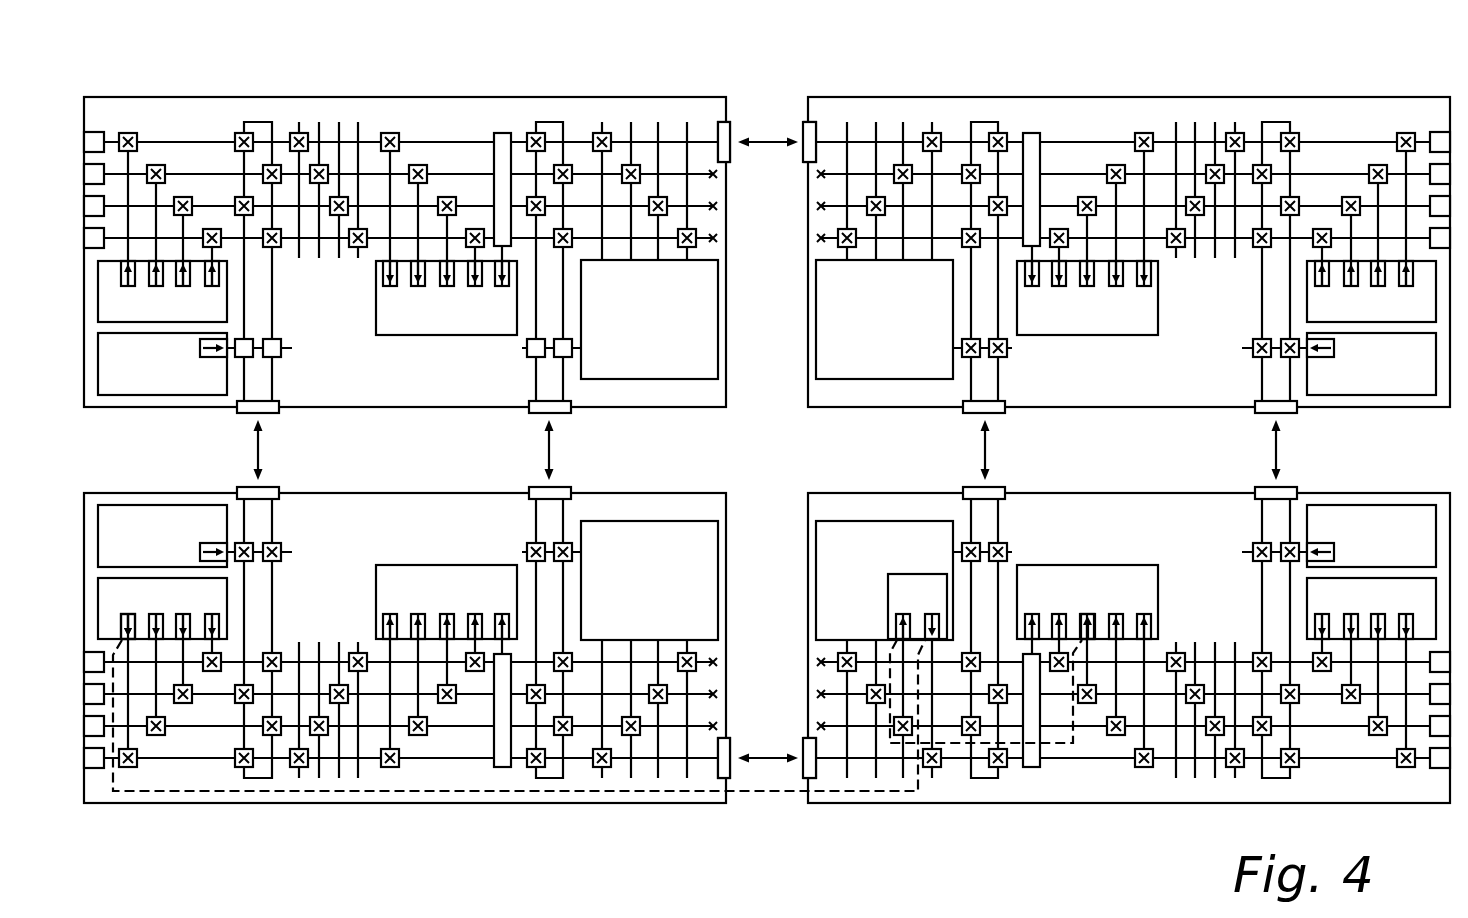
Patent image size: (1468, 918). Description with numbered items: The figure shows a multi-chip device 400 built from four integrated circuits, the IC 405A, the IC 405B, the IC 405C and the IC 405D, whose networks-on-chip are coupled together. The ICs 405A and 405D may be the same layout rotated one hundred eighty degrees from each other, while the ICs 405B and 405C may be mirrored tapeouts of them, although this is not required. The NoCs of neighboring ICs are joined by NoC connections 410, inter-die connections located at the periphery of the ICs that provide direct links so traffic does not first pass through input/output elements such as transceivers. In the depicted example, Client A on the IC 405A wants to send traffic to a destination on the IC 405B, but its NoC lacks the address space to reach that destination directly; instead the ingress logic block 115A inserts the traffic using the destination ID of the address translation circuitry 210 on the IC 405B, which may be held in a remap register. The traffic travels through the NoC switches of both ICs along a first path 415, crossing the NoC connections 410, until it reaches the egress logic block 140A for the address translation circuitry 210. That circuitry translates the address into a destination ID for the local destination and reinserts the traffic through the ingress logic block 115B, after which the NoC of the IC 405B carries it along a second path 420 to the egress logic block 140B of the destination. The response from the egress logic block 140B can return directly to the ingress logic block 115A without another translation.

The multi-chip device 400 is at (426, 47).
The IC 405A is at (218, 491).
The IC 405B is at (942, 491).
The IC 405C is at (942, 97).
The IC 405D is at (218, 97).
The NoC connections 410 is at (732, 153).
The ingress logic block 115A is at (135, 628).
The ingress logic block 115B is at (898, 622).
The egress logic block 140A is at (920, 635).
The egress logic block 140B is at (1084, 638).
The address translation circuitry 210 is at (920, 573).
The first path 415 is at (458, 793).
The second path 420 is at (1052, 745).